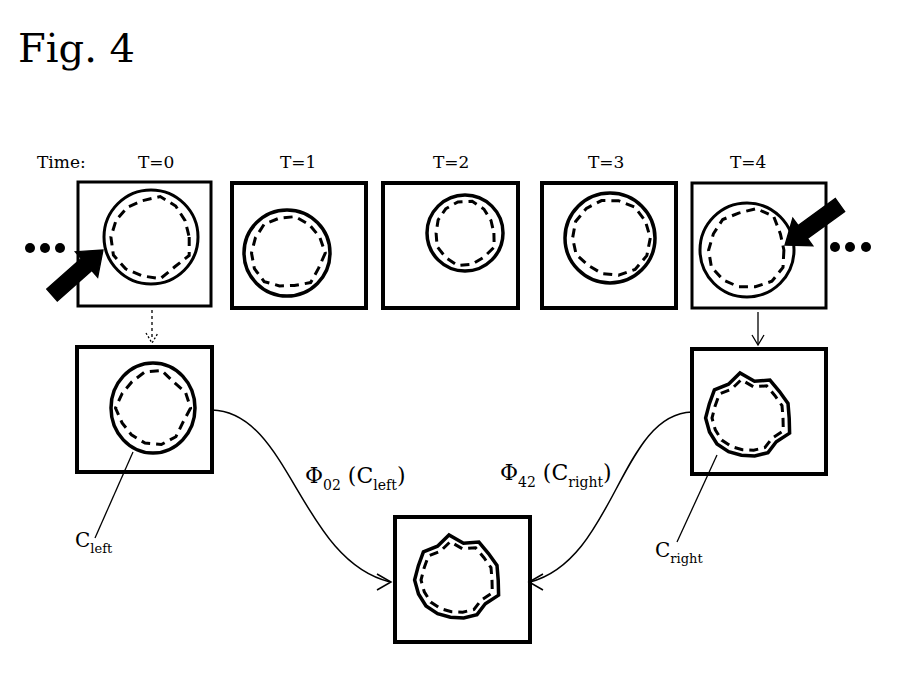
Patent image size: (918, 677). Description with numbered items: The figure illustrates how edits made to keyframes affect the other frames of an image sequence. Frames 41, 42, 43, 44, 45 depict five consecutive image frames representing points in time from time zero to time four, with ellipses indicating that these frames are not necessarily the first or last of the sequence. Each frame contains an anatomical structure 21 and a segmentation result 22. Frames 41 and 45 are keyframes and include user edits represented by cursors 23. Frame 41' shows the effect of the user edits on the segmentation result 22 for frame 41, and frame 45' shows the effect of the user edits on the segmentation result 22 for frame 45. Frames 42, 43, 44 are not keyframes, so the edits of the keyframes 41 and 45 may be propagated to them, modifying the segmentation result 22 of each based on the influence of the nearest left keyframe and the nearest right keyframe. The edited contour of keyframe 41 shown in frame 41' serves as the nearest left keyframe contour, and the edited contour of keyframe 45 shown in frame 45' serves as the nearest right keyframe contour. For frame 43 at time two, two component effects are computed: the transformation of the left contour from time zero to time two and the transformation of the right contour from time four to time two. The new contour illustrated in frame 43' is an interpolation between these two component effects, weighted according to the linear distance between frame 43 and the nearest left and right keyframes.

The anatomical structure 21 is at (112, 265).
The segmentation result 22 is at (142, 283).
The cursor 23 is at (58, 308).
The frame 41 is at (144, 256).
The frame 42 is at (327, 322).
The frame 43 is at (452, 257).
The frame 44 is at (633, 322).
The frame 45 is at (759, 257).
The frame 41' is at (145, 422).
The frame 43' is at (462, 591).
The frame 45' is at (759, 425).